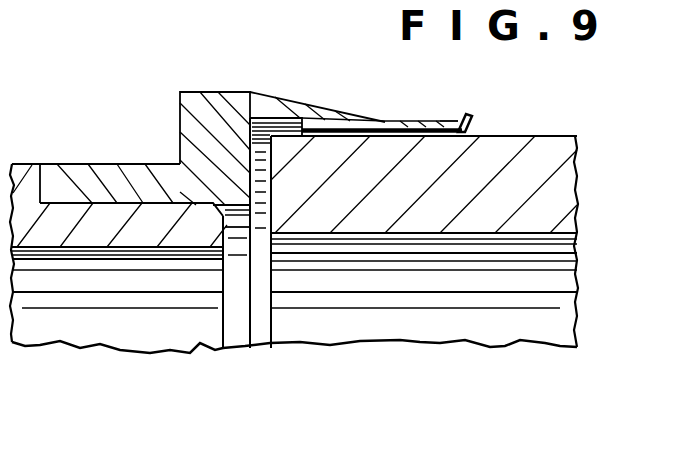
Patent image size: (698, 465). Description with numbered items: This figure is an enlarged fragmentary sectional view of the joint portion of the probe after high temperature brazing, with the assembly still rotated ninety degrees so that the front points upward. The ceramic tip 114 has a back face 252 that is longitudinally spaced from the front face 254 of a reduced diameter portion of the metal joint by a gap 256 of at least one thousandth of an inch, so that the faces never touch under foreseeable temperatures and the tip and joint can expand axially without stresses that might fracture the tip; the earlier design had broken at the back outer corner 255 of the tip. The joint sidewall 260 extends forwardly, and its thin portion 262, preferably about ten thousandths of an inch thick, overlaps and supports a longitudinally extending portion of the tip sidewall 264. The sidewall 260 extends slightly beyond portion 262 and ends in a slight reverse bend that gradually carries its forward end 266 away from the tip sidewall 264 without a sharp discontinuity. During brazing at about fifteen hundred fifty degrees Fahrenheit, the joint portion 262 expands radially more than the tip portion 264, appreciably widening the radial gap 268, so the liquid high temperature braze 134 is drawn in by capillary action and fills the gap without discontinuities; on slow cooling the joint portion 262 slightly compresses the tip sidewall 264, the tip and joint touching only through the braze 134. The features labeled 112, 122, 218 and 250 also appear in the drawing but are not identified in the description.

The dielectric layer 112 is at (22, 178).
The tip 114 is at (554, 133).
The substrate region 122 is at (160, 339).
The high temperature braze 134 is at (462, 134).
The substrate region 218 is at (412, 337).
The interconnect structure 250 is at (43, 172).
The back face of the tip 252 is at (250, 118).
The front face of the joint 254 is at (180, 113).
The back outer corner of the tip 255 is at (284, 139).
The gap 256 is at (180, 158).
The joint sidewall 260 is at (463, 84).
The supporting portion of the joint sidewall 262 is at (412, 121).
The tip sidewall 264 is at (578, 134).
The forward end of the joint sidewall 266 is at (460, 116).
The radial gap 268 is at (471, 127).